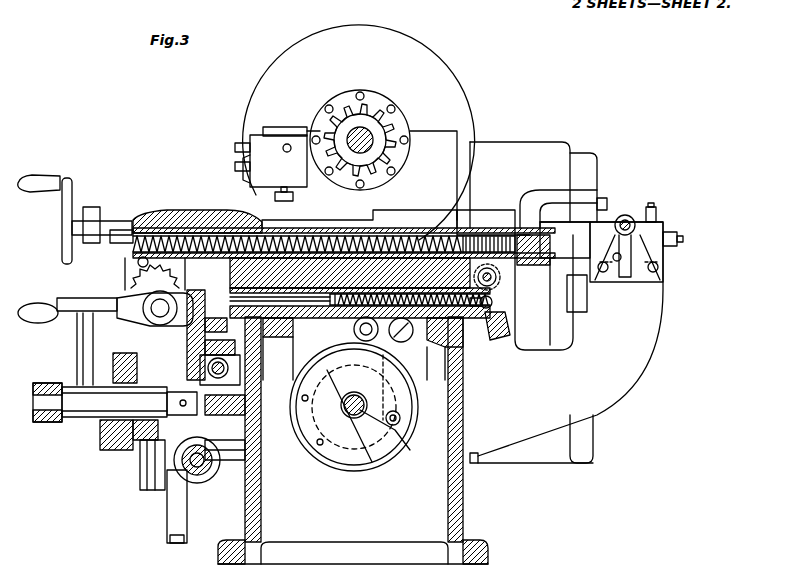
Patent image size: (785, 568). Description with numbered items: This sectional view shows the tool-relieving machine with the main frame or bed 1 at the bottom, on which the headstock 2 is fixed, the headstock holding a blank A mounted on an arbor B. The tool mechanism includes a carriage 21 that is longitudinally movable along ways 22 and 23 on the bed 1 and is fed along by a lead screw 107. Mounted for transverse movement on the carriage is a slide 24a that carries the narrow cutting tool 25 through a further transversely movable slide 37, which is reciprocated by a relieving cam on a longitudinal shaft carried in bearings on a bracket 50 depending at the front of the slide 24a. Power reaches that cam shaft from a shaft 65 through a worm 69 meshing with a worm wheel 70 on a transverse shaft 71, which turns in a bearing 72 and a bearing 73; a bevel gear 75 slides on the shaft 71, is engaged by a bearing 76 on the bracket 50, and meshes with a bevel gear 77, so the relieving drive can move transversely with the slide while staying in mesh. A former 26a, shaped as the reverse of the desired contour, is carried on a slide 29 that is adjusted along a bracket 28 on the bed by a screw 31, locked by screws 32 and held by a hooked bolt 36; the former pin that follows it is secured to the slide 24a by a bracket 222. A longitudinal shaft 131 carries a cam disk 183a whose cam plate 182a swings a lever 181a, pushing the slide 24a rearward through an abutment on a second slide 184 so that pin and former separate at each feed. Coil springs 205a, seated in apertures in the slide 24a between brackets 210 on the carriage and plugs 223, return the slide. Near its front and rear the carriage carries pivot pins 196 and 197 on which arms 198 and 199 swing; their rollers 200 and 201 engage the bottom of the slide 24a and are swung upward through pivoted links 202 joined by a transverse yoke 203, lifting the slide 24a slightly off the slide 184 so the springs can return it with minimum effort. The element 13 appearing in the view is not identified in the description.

The main frame 1 is at (463, 512).
The headstock 2 is at (456, 80).
The blank A is at (375, 110).
The arbor B is at (392, 155).
The cutting tool 25 is at (310, 140).
The bracket 28 is at (612, 382).
The bracket 222 is at (560, 162).
The slide 29 is at (665, 222).
The screw 31 is at (630, 214).
The screws 32 is at (653, 206).
The hooked bolt 36 is at (683, 239).
The brackets 210 is at (560, 312).
The former 26a is at (575, 222).
The coil springs 205a is at (370, 228).
The slide 37 is at (398, 230).
The second slide 184 is at (433, 235).
The slide 24a is at (478, 235).
The carriage 21 is at (498, 330).
The roller 201 is at (500, 280).
The arm 199 is at (495, 302).
The transverse pivot pin 197 is at (505, 325).
The pivoted links 202 is at (305, 322).
The screw 13 is at (409, 340).
The way 23 is at (442, 350).
The way 22 is at (283, 345).
The screw 107 is at (262, 366).
The transverse yoke 203 is at (358, 365).
The longitudinal rotatable shaft 131 is at (355, 418).
The lever 181a is at (398, 420).
The cam plate 182a is at (332, 463).
The cam disk 183a is at (388, 445).
The plugs 223 is at (115, 258).
The bracket 50 is at (125, 286).
The roller 200 is at (185, 285).
The arm 198 is at (195, 322).
The transverse pivot pin 196 is at (207, 332).
The bevel gear 77 is at (165, 366).
The bearing 73 is at (53, 372).
The transverse shaft 71 is at (70, 420).
The bearing 76 is at (110, 445).
The bevel gear 75 is at (140, 465).
The worm 69 is at (205, 482).
The shaft 65 is at (215, 482).
The bearing 72 is at (250, 436).
The worm wheel 70 is at (250, 460).